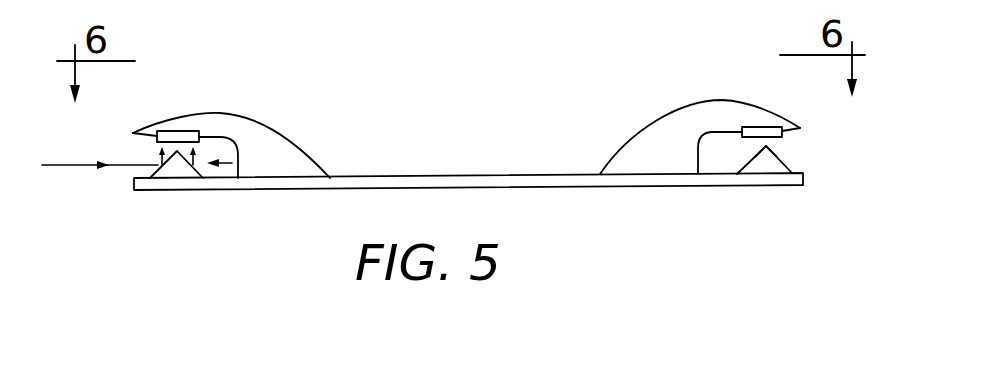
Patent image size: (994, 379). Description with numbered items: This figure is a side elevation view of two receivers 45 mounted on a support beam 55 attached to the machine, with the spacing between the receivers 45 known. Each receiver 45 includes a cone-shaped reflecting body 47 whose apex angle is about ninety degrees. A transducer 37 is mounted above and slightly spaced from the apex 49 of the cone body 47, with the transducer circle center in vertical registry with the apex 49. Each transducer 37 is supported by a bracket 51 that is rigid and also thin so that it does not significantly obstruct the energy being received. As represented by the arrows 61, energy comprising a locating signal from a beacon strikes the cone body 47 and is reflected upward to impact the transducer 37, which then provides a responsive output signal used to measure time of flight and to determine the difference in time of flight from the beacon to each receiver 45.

The transducer 37 is at (178, 131).
The receiver 45 is at (645, 70).
The cone-shaped reflecting body 47 is at (178, 168).
The apex 49 is at (767, 147).
The bracket 51 is at (642, 130).
The support beam 55 is at (408, 176).
The arrows 61 is at (70, 165).